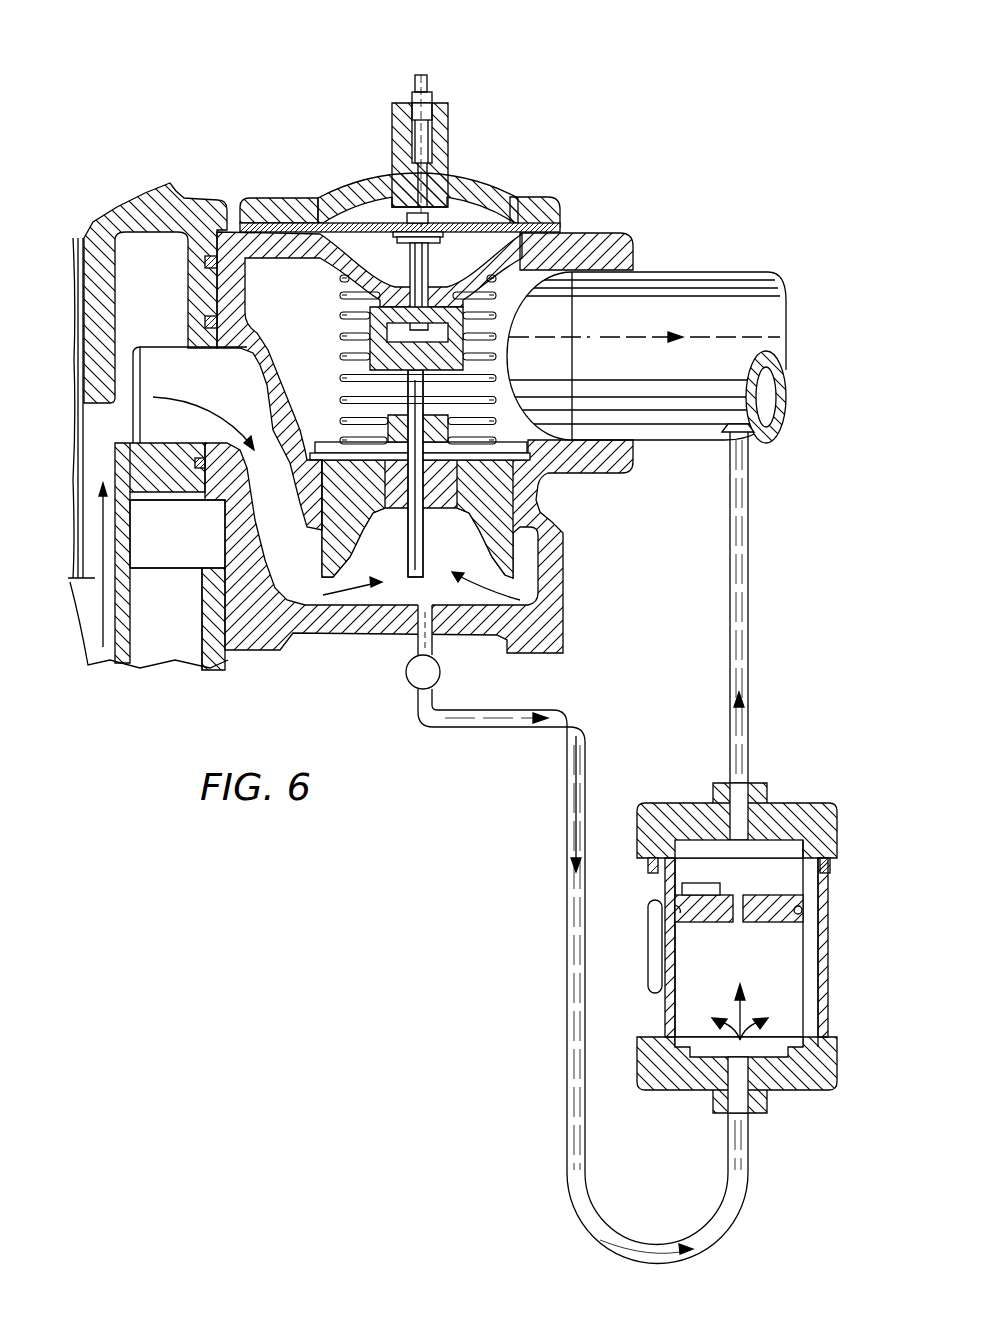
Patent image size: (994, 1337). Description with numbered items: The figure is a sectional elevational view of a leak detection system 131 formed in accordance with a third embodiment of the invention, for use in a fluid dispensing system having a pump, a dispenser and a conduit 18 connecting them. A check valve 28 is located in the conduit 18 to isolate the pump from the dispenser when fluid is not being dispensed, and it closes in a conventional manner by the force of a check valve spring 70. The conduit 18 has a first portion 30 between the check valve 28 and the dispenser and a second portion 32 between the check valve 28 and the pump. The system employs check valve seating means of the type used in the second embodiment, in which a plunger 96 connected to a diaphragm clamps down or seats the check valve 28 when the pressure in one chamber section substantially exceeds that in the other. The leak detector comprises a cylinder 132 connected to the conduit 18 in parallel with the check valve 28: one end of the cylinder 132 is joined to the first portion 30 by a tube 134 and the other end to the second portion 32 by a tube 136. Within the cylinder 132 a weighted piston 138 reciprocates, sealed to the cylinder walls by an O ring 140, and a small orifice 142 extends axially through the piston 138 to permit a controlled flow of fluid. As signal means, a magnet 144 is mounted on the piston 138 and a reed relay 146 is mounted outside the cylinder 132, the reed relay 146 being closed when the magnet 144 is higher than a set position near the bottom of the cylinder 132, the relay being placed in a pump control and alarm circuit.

The leak detection system 131 is at (547, 141).
The conduit 18 is at (685, 267).
The check valve spring 70 is at (497, 290).
The plunger 96 is at (470, 343).
The check valve 28 is at (508, 504).
The first portion of the conduit 30 is at (697, 443).
The second portion of the conduit 32 is at (563, 604).
The tube 134 is at (729, 648).
The cylinder 132 is at (712, 802).
The magnet 144 is at (698, 884).
The orifice 142 is at (738, 896).
The O ring 140 is at (680, 910).
The weighted piston 138 is at (797, 914).
The reed relay 146 is at (652, 905).
The tube 136 is at (743, 1183).